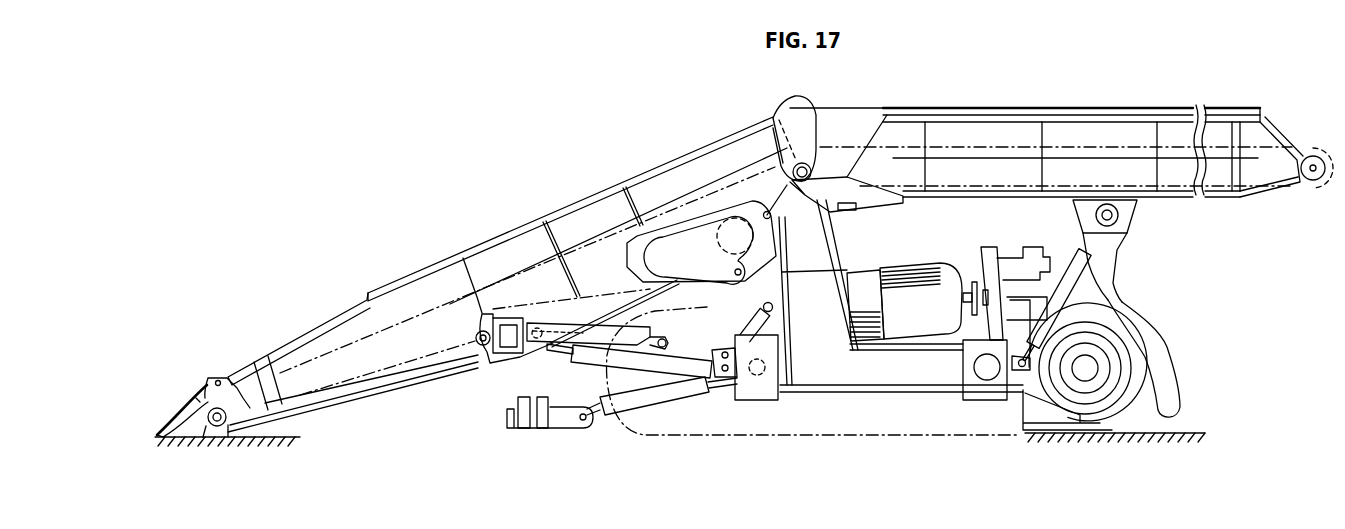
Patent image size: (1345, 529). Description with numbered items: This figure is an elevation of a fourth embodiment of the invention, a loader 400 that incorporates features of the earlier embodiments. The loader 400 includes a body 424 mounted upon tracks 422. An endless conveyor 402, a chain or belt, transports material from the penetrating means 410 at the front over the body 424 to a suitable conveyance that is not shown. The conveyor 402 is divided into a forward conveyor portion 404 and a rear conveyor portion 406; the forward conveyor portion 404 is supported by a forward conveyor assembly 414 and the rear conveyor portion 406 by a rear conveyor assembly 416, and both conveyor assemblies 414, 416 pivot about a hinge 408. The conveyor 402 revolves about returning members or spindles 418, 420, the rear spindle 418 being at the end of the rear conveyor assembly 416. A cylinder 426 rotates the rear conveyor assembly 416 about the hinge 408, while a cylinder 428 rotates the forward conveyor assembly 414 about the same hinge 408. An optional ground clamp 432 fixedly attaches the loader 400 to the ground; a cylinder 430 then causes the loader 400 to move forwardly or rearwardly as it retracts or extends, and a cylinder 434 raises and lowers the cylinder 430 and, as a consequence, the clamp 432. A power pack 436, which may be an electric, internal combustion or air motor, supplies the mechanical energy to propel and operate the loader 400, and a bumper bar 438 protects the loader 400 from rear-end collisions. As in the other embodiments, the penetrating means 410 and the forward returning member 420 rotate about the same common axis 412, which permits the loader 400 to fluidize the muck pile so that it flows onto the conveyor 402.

The loader 400 is at (533, 180).
The endless conveyor 402 is at (850, 143).
The forward conveyor portion 404 is at (738, 175).
The rear conveyor portion 406 is at (907, 143).
The hinge 408 is at (812, 137).
The penetrating means 410 is at (207, 397).
The common axis 412 is at (212, 424).
The forward conveyor assembly 414 is at (442, 262).
The rear conveyor assembly 416 is at (1063, 110).
The returning member (spindle) 418 is at (1318, 183).
The forward returning member (spindle) 420 is at (237, 427).
The tracks 422 is at (1107, 427).
The body 424 is at (1143, 257).
The cylinder 426 is at (1077, 300).
The cylinder 428 is at (607, 370).
The cylinder 430 is at (690, 387).
The ground clamp 432 is at (567, 428).
The cylinder 434 is at (743, 330).
The power pack 436 is at (925, 267).
The bumper bar 438 is at (1167, 383).